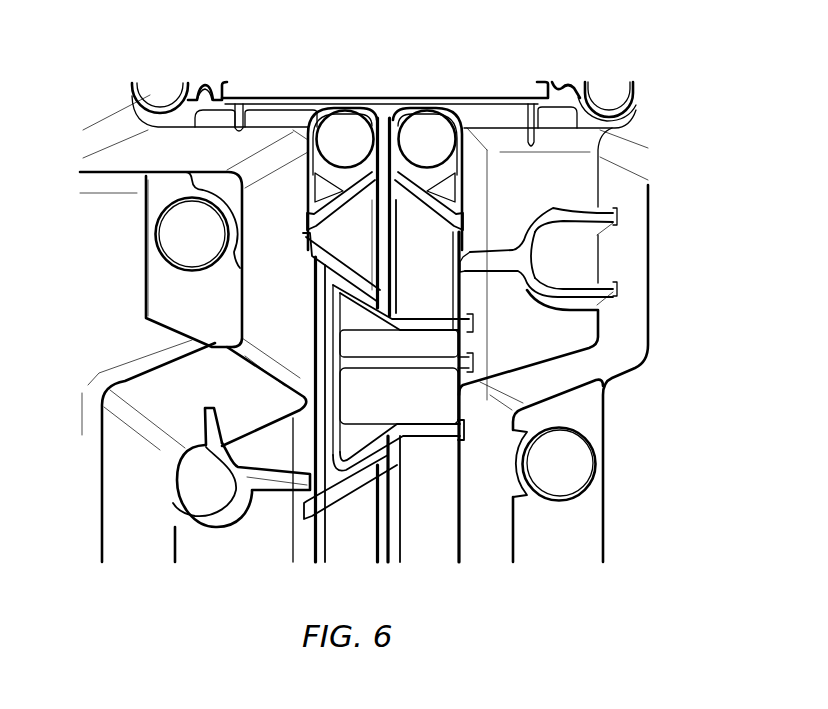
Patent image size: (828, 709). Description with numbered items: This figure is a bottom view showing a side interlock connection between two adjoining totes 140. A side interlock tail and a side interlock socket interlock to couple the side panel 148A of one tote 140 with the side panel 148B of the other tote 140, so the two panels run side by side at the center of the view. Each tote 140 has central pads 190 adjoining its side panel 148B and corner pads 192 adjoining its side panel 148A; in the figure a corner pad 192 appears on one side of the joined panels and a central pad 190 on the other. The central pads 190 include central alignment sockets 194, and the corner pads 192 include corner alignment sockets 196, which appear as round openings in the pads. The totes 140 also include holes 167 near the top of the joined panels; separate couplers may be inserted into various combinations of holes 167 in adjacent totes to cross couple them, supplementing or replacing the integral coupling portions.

The tote 140 is at (515, 83).
The hole 167 is at (343, 129).
The side panel 148A is at (303, 318).
The side panel 148B is at (553, 337).
The central pad 190 is at (596, 404).
The corner pad 192 is at (160, 300).
The central alignment socket 194 is at (583, 466).
The corner alignment socket 196 is at (177, 240).